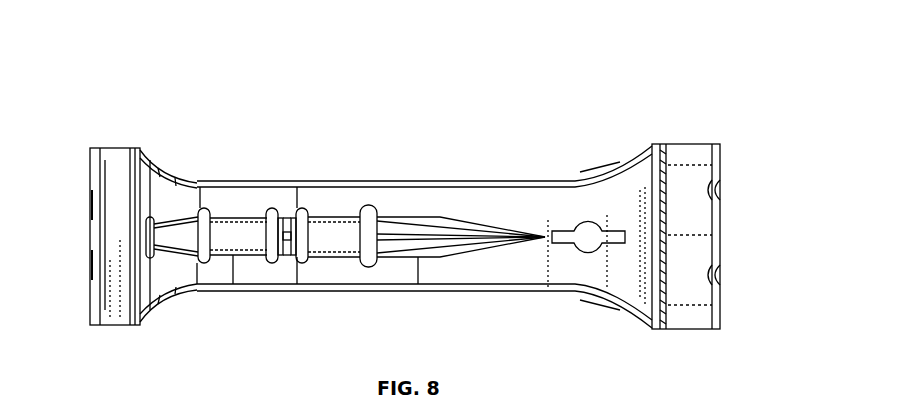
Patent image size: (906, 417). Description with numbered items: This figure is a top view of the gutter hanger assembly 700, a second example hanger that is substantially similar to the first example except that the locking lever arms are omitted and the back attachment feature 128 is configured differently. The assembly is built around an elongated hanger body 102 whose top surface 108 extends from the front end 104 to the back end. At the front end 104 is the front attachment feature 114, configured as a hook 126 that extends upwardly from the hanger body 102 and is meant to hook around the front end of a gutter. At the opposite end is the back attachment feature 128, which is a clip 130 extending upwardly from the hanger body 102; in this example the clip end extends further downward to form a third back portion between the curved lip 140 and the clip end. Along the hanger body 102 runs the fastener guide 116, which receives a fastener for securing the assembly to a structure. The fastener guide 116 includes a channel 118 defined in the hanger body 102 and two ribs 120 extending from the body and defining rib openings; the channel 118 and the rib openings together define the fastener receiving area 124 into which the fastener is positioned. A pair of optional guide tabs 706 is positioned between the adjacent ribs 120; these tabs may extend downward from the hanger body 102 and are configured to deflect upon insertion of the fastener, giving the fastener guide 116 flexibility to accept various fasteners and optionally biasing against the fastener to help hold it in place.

The gutter hanger assembly 700 is at (664, 49).
The curved lip 140 is at (97, 150).
The back attachment feature 128 is at (108, 197).
The clip 130 is at (140, 152).
The hanger body 102 is at (460, 181).
The top surface 108 is at (508, 199).
The fastener guide 116 is at (405, 151).
The front end 104 is at (643, 153).
The front attachment feature 114 is at (705, 152).
The hook 126 is at (705, 219).
The channel 118 is at (198, 263).
The rib 120 is at (248, 240).
The guide tab 706 is at (287, 226).
The fastener receiving area 124 is at (402, 243).